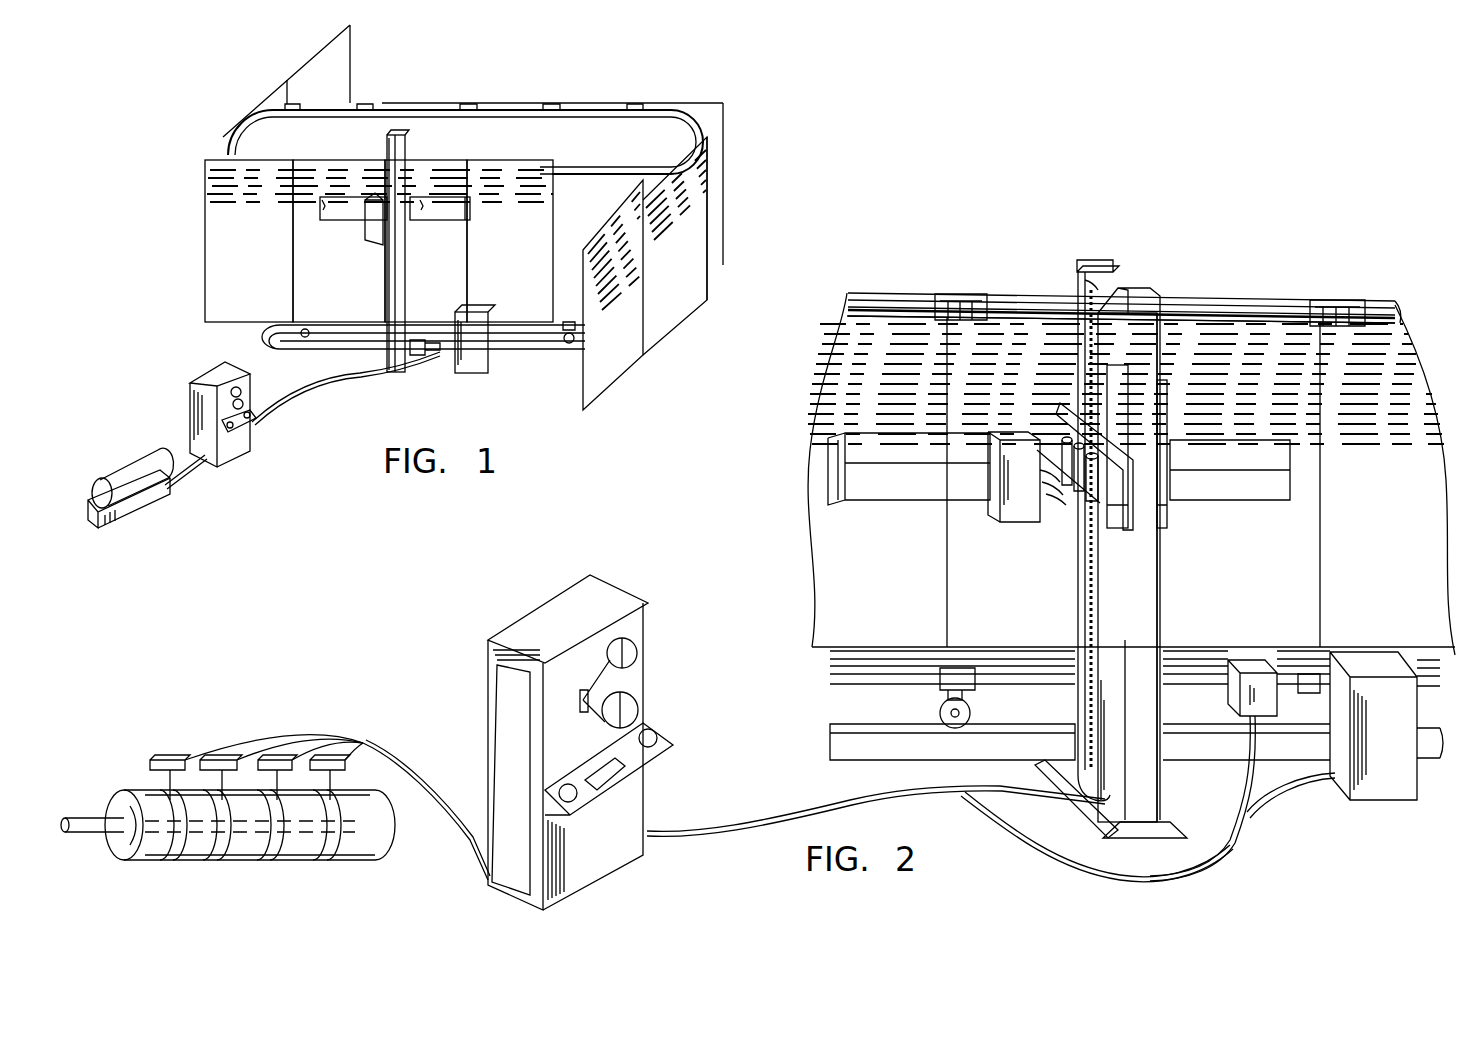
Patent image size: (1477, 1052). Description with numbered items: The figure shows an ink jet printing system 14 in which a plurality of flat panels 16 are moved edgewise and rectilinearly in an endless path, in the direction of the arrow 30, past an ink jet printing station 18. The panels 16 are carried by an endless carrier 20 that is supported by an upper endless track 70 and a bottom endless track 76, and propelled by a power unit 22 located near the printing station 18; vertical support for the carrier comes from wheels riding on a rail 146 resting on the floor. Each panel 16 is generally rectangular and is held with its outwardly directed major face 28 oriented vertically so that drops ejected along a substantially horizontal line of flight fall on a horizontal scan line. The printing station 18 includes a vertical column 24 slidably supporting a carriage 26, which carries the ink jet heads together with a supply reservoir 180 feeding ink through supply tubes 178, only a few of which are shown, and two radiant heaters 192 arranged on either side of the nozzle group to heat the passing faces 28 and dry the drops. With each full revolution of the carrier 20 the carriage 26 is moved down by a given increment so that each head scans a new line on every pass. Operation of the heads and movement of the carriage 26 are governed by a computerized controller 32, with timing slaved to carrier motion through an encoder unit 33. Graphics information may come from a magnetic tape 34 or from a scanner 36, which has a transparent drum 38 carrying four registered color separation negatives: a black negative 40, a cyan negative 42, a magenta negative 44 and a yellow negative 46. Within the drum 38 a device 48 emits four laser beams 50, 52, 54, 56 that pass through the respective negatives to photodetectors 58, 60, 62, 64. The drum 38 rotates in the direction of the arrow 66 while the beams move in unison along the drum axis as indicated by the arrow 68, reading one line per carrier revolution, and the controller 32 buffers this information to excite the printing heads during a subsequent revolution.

In FIG. 1, the ink jet printing system 14 is at (548, 76).
In FIG. 2, the ink jet printing system 14 is at (1262, 285).
In FIG. 1, the flat panels 16 is at (321, 66).
In FIG. 2, the flat panels 16 is at (868, 302).
In FIG. 1, the ink jet printing station 18 is at (390, 256).
In FIG. 2, the ink jet printing station 18 is at (1130, 292).
In FIG. 1, the endless carrier 20 is at (361, 104).
In FIG. 2, the endless carrier 20 is at (1430, 660).
In FIG. 1, the power unit 22 is at (468, 360).
In FIG. 2, the power unit 22 is at (1375, 786).
In FIG. 1, the vertical column 24 is at (386, 288).
In FIG. 2, the vertical column 24 is at (1150, 558).
In FIG. 1, the carriage 26 is at (366, 215).
In FIG. 2, the carriage 26 is at (1010, 510).
In FIG. 2, the major face 28 is at (866, 600).
In FIG. 1, the arrow 30 is at (458, 152).
In FIG. 2, the arrow 30 is at (1180, 272).
In FIG. 1, the computerized controller 32 is at (200, 378).
In FIG. 2, the computerized controller 32 is at (600, 598).
In FIG. 1, the encoder unit 33 is at (420, 357).
In FIG. 2, the encoder unit 33 is at (1258, 662).
In FIG. 2, the magnetic tape 34 is at (612, 655).
In FIG. 1, the scanner 36 is at (122, 462).
In FIG. 2, the scanner 36 is at (383, 846).
In FIG. 2, the transparent drum 38 is at (390, 824).
In FIG. 2, the black separation negative 40 is at (185, 845).
In FIG. 2, the cyan separation negative 42 is at (243, 845).
In FIG. 2, the magenta separation negative 44 is at (293, 845).
In FIG. 2, the yellow separation negative 46 is at (343, 845).
In FIG. 2, the laser emitting device 48 is at (86, 834).
In FIG. 2, the laser beam 50 is at (168, 777).
In FIG. 2, the laser beam 52 is at (220, 781).
In FIG. 2, the laser beam 54 is at (275, 781).
In FIG. 2, the laser beam 56 is at (328, 781).
In FIG. 2, the photodetector 58 is at (160, 755).
In FIG. 2, the photodetector 60 is at (215, 755).
In FIG. 2, the photodetector 62 is at (283, 755).
In FIG. 2, the photodetector 64 is at (347, 762).
In FIG. 2, the arrow 66 is at (138, 852).
In FIG. 2, the arrow 68 is at (95, 812).
In FIG. 1, the upper endless track 70 is at (583, 176).
In FIG. 1, the bottom endless track 76 is at (572, 322).
In FIG. 1, the rail 146 is at (545, 346).
In FIG. 2, the rail 146 is at (875, 745).
In FIG. 2, the supply tube 178 is at (1062, 502).
In FIG. 2, the supply reservoir 180 is at (1060, 412).
In FIG. 1, the radiant heaters 192 is at (338, 200).
In FIG. 2, the radiant heaters 192 is at (915, 450).